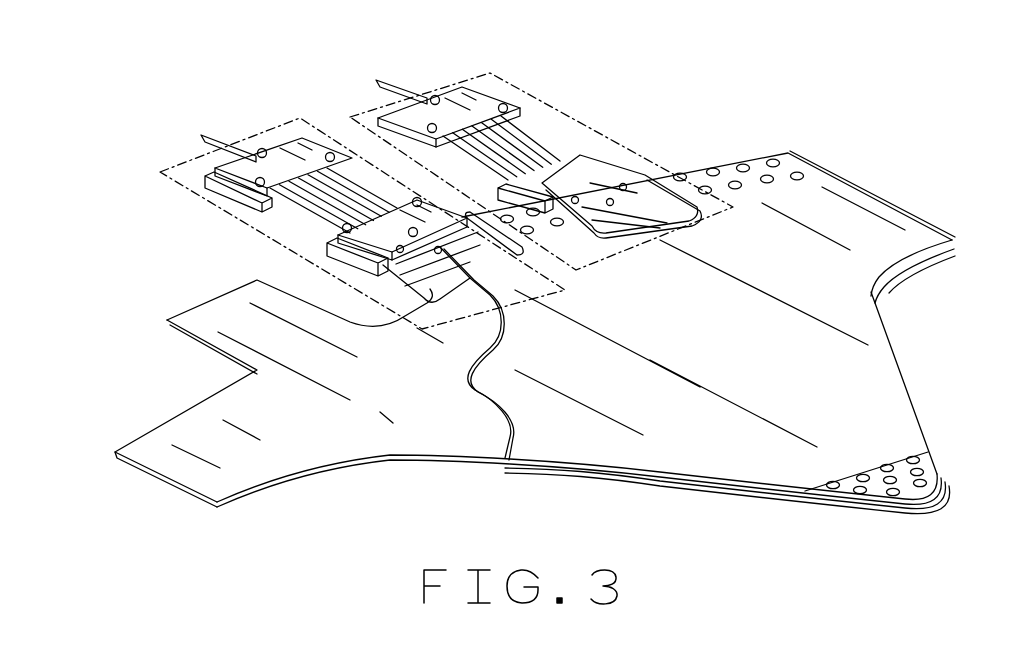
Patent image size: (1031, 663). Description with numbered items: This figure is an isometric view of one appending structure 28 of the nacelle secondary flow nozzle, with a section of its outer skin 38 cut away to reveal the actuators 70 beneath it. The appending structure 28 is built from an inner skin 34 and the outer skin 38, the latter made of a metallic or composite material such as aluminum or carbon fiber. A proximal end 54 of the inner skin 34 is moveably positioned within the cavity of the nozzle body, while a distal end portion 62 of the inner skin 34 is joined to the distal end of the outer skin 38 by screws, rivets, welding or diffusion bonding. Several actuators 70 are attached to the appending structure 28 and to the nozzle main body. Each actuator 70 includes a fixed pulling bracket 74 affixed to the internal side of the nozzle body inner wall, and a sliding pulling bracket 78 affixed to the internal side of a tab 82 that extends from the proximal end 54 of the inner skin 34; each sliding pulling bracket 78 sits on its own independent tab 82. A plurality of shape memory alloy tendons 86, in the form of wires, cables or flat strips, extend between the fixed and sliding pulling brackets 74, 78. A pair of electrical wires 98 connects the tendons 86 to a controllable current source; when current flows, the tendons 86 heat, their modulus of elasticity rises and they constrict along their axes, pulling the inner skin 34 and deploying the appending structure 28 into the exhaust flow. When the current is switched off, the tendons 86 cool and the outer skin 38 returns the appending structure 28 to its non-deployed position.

The appending structure 28 is at (905, 196).
The inner skin 34 is at (437, 392).
The outer skin 38 is at (710, 331).
The proximal end of the inner skin 54 is at (150, 455).
The distal end portion of the inner skin 62 is at (851, 508).
The actuator 70 is at (270, 130).
The fixed pulling bracket 74 is at (213, 167).
The sliding pulling bracket 78 is at (330, 234).
The tab 82 is at (167, 321).
The shape memory alloy tendon 86 is at (292, 212).
The electrical wire 98 is at (222, 142).